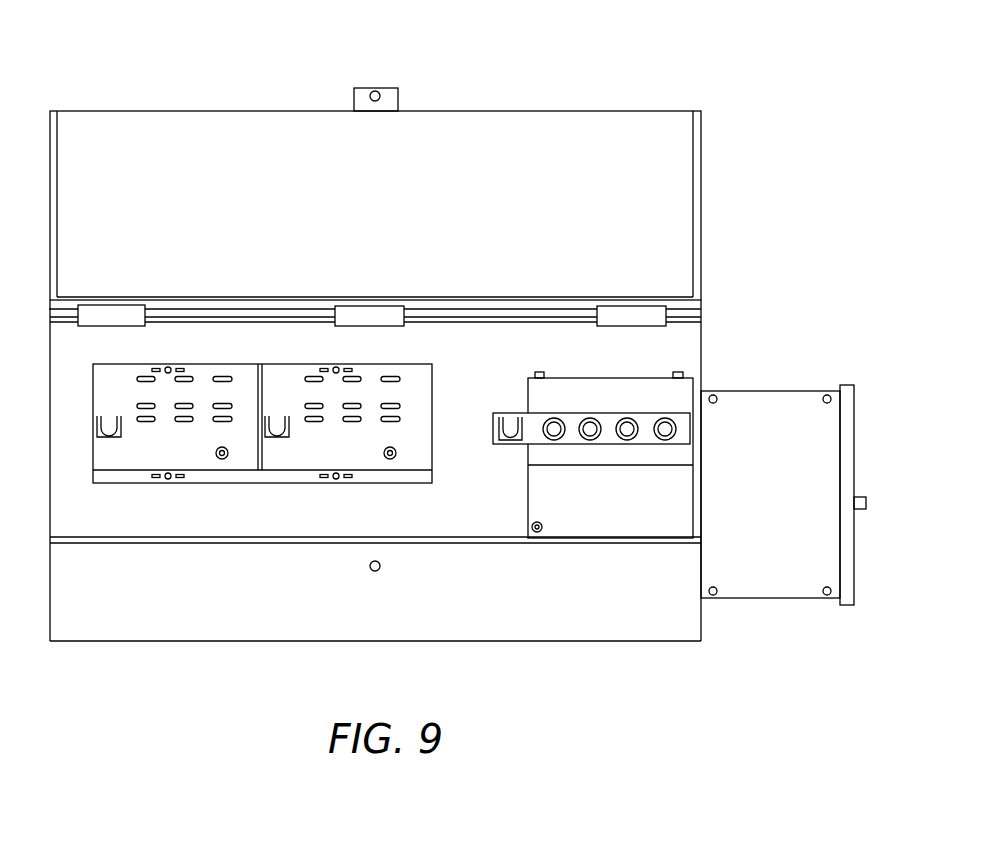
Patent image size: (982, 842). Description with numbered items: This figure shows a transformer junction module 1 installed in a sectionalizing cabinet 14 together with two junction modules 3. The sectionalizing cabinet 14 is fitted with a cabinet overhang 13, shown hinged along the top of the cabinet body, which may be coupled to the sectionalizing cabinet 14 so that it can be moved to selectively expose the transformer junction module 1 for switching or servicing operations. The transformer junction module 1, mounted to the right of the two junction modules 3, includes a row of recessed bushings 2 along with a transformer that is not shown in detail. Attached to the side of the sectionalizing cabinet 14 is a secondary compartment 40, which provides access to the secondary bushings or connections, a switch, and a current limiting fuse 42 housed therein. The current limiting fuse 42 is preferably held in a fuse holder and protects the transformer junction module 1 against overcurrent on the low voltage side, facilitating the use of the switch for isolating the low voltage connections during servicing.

The transformer junction module 1 is at (650, 397).
The recessed bushings 2 is at (554, 444).
The junction modules 3 is at (202, 464).
The cabinet overhang 13 is at (455, 132).
The sectionalizing cabinet 14 is at (123, 625).
The secondary compartment 40 is at (772, 407).
The current limiting fuse 42 is at (848, 547).